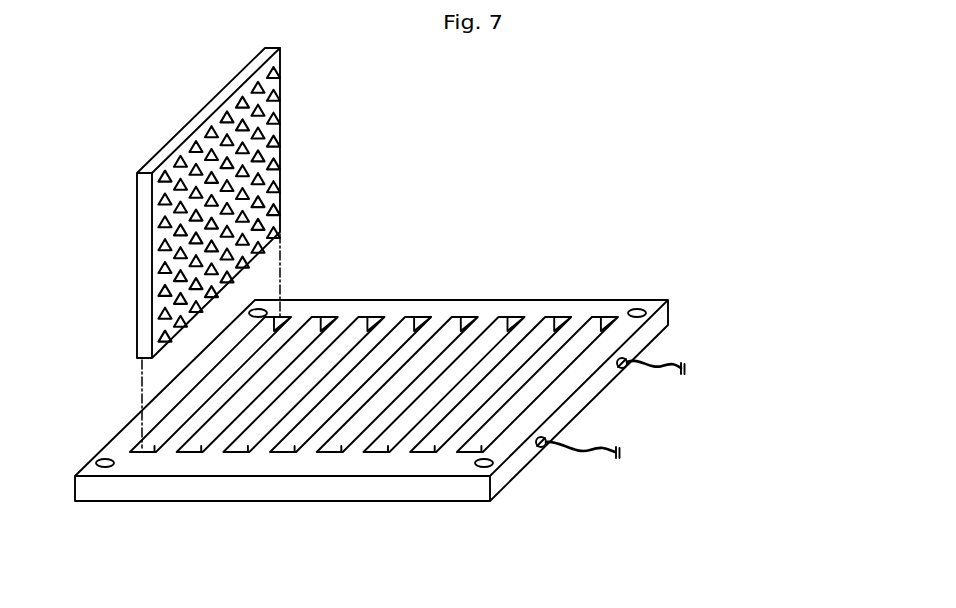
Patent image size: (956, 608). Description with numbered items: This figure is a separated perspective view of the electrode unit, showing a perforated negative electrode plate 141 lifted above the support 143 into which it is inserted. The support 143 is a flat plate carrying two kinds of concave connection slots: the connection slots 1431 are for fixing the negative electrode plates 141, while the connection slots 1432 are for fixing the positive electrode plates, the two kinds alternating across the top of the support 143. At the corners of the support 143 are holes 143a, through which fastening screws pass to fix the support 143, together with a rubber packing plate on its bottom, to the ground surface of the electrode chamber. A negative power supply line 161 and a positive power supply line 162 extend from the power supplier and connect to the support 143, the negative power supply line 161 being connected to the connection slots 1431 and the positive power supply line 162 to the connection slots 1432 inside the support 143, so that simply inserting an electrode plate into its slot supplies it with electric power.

The negative electrode plate 141 is at (150, 207).
The support 143 is at (600, 402).
The holes 143a is at (495, 466).
The concave connection slots 1431 is at (373, 318).
The concave connection slots 1432 is at (416, 326).
The negative power supply line 161 is at (652, 360).
The positive power supply line 162 is at (586, 446).